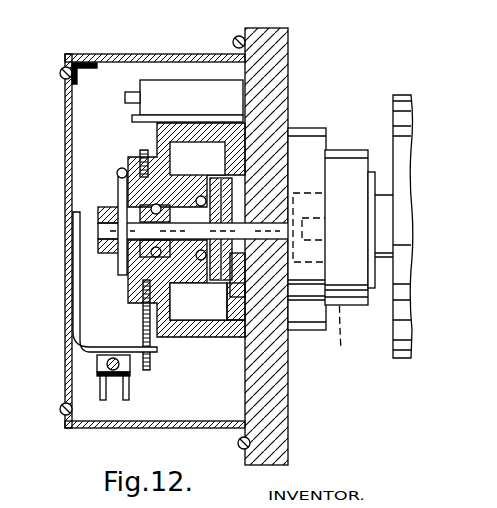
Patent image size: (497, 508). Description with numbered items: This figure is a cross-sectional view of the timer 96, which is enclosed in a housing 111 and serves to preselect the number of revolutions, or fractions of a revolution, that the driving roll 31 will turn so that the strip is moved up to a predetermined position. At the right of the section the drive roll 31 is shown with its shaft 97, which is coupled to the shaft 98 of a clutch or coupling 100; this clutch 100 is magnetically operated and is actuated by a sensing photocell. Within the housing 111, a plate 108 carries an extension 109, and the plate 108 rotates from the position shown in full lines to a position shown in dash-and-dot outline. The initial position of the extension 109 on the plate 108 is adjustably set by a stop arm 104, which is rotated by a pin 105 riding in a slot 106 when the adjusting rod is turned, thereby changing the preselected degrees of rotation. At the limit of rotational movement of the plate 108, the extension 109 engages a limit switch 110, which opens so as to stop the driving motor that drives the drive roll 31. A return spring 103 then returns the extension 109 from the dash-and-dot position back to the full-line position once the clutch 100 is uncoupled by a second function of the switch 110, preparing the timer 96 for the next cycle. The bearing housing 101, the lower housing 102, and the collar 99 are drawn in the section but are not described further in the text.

The timer 96 is at (170, 41).
The housing 111 is at (82, 62).
The limit switch 110 is at (140, 82).
The plate 108 is at (142, 149).
The collar 99 is at (110, 218).
The bearing housing 101 is at (191, 183).
The return spring 103 is at (125, 278).
The stop arm 104 is at (70, 325).
The pin 105 is at (95, 370).
The slot 106 is at (97, 390).
The extension 109 is at (145, 372).
The lower housing 102 is at (186, 340).
The clutch 100 is at (216, 284).
The shaft 98 is at (298, 200).
The shaft 97 is at (342, 318).
The driving roll 31 is at (393, 115).